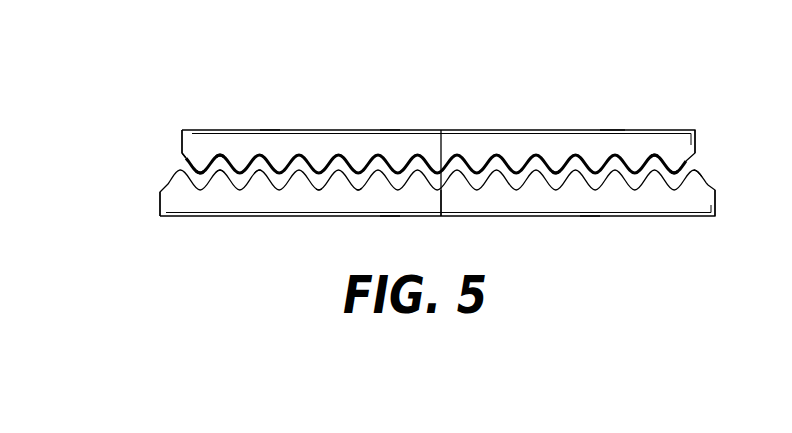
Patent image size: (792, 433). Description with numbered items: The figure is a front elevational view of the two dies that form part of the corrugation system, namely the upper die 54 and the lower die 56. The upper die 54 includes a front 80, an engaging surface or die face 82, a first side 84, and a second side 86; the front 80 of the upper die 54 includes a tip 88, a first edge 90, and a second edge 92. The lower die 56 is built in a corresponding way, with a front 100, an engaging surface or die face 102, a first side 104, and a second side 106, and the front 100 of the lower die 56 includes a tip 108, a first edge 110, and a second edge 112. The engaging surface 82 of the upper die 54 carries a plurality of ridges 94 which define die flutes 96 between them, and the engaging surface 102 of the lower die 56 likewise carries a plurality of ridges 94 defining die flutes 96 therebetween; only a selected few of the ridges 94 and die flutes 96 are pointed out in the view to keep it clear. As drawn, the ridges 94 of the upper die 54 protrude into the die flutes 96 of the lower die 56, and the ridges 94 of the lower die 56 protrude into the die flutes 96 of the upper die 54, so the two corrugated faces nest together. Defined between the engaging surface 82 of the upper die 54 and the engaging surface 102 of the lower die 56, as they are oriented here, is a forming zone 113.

The upper die 54 is at (513, 131).
The lower die 56 is at (502, 217).
The front 80 is at (390, 138).
The engaging surface 82 is at (186, 166).
The first side 84 is at (180, 145).
The second side 86 is at (697, 140).
The tip 88 is at (443, 140).
The first edge 90 is at (269, 133).
The second edge 92 is at (613, 142).
The ridges 94 is at (202, 170).
The die flutes 96 is at (212, 160).
The front 100 is at (391, 198).
The engaging surface 102 is at (694, 168).
The first side 104 is at (158, 199).
The second side 106 is at (717, 203).
The tip 108 is at (443, 200).
The first edge 110 is at (258, 184).
The second edge 112 is at (590, 200).
The forming zone 113 is at (637, 188).